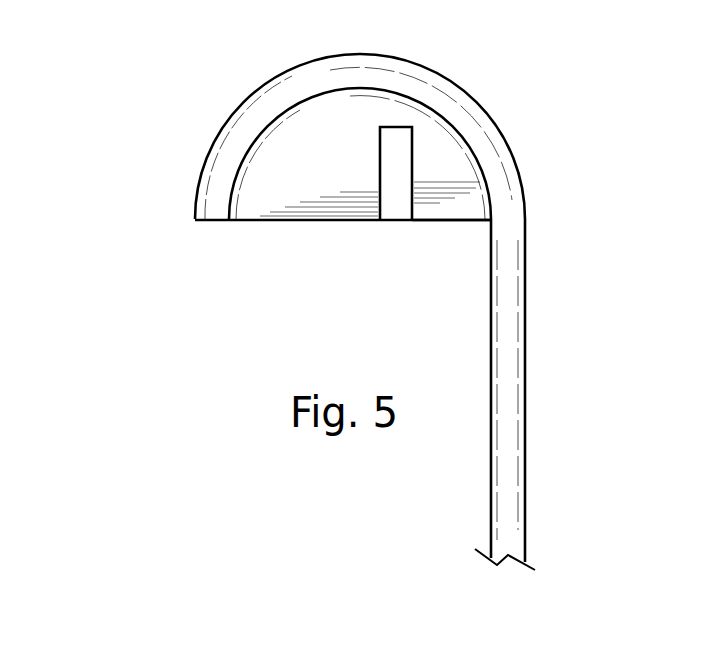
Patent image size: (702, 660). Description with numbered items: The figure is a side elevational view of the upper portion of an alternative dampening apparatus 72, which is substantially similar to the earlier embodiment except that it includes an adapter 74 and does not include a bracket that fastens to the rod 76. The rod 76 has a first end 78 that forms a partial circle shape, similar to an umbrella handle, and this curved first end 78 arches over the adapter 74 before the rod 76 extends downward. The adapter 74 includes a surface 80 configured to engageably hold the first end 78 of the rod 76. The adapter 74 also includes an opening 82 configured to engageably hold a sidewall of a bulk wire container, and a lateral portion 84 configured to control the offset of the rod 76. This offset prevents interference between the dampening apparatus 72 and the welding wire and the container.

The dampening apparatus 72 is at (176, 245).
The adapter 74 is at (298, 192).
The rod 76 is at (508, 423).
The first end 78 is at (470, 76).
The surface 80 is at (290, 125).
The opening 82 is at (393, 202).
The lateral portion 84 is at (457, 222).